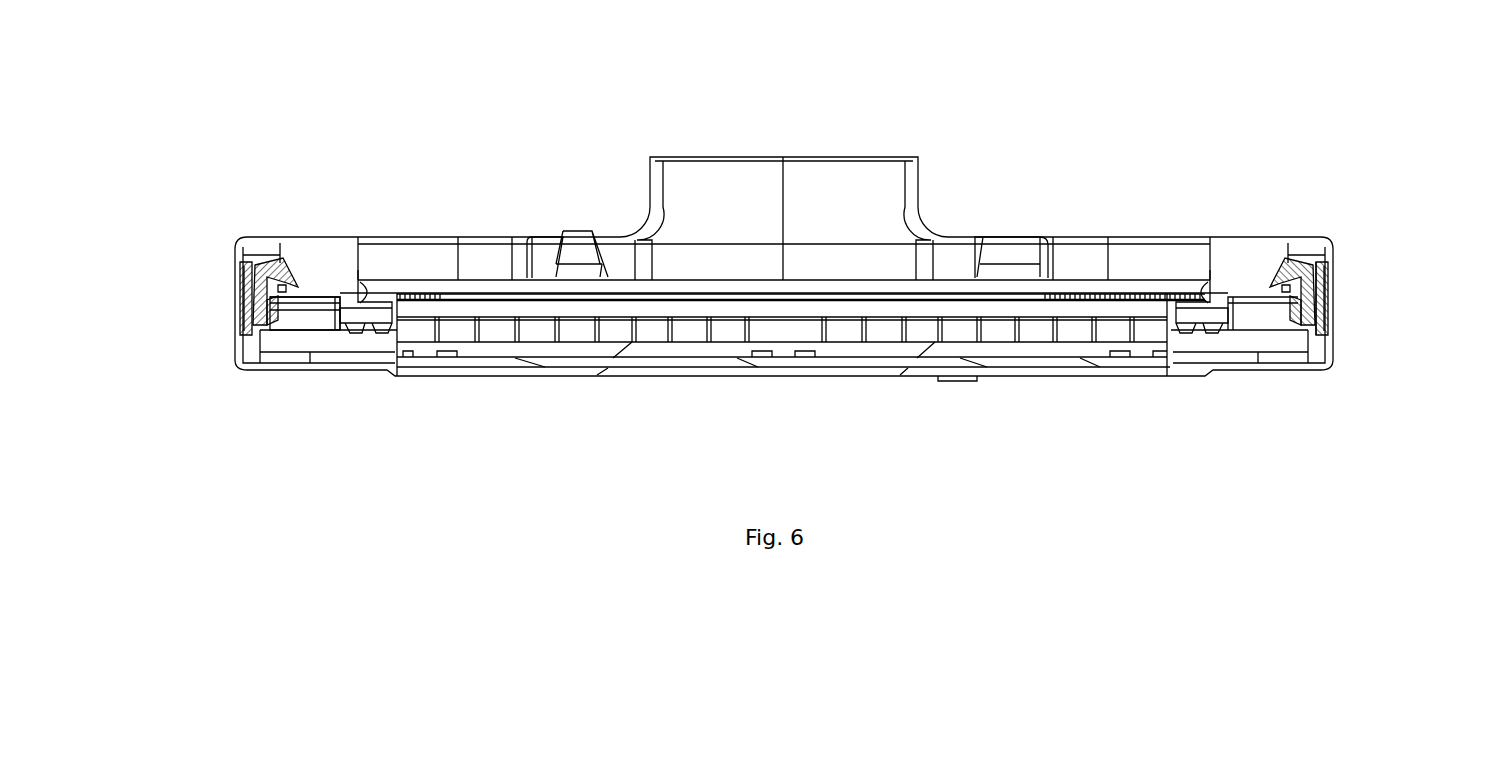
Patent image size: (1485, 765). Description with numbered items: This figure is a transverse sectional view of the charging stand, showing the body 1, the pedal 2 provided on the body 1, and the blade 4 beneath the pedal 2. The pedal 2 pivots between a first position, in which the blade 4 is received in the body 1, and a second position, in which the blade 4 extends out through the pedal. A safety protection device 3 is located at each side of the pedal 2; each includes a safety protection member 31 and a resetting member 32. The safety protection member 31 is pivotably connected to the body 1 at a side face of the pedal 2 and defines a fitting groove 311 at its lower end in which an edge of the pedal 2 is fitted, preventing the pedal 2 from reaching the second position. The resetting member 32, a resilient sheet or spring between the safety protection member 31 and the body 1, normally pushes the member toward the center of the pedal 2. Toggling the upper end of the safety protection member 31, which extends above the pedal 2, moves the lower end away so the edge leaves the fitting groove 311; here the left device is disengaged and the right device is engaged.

The body 1 is at (650, 157).
The pedal 2 is at (317, 307).
The safety protection device 3 is at (1413, 167).
The blade 4 is at (725, 312).
The safety protection member 31 is at (258, 268).
The resetting member 32 is at (242, 288).
The fitting groove 311 is at (273, 318).